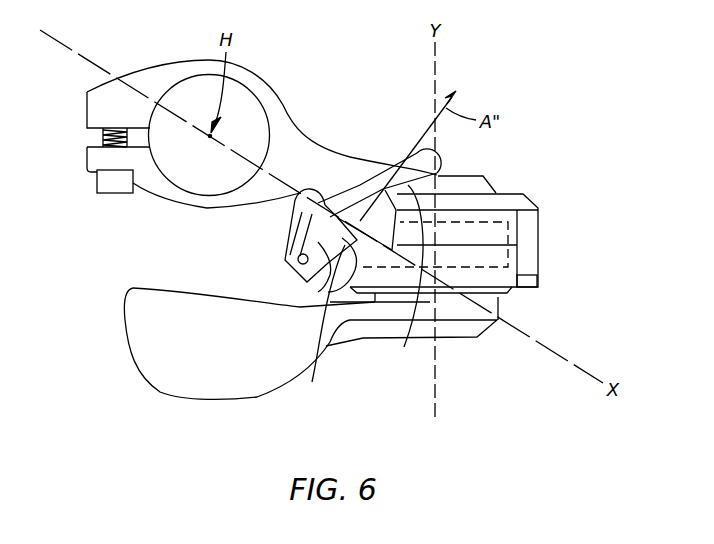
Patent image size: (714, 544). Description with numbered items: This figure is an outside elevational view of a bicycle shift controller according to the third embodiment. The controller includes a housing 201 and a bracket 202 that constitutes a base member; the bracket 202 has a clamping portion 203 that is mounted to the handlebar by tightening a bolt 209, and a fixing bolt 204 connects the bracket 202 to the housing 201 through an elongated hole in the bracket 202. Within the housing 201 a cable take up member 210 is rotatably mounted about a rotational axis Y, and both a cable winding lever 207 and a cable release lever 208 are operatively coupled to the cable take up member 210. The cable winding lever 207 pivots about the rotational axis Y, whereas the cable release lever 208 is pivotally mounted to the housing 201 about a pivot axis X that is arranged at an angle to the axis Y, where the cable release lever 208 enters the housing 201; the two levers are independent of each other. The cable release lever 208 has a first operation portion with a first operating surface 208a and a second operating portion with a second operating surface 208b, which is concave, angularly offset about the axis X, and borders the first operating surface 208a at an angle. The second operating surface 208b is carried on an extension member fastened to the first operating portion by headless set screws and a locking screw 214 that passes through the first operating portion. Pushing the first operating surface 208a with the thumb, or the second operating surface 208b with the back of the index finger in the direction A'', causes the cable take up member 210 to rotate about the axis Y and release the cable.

The housing 201 is at (533, 200).
The bracket 202 is at (310, 143).
The clamping portion 203 is at (263, 80).
The fixing bolt 204 is at (448, 168).
The cable winding lever 207 is at (242, 358).
The cable release lever 208 is at (274, 243).
The first operating surface 208a is at (316, 325).
The second operating surface 208b is at (405, 348).
The bolt 209 is at (106, 195).
The cable take up member 210 is at (508, 222).
The locking screw 214 is at (297, 263).